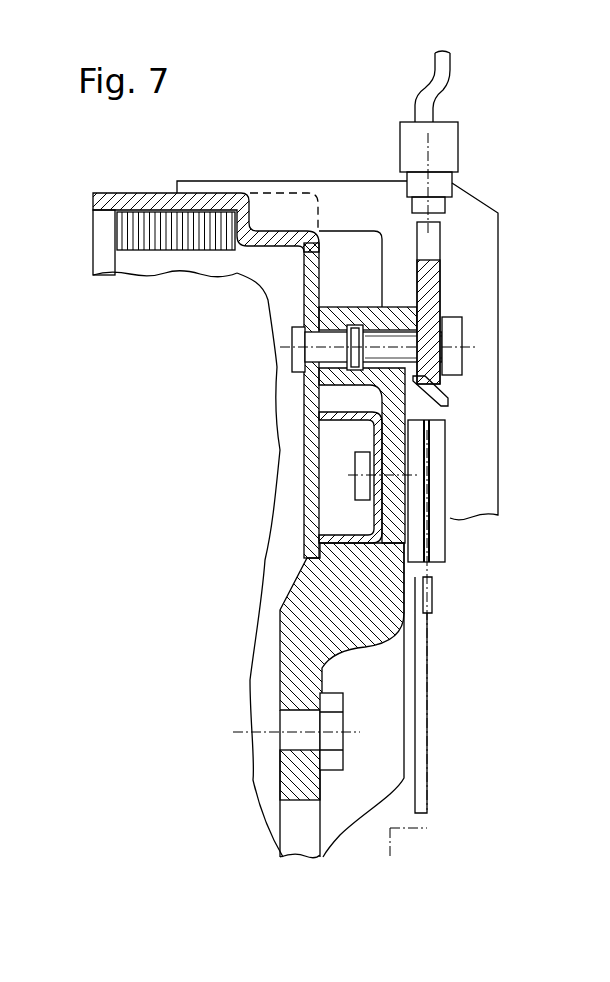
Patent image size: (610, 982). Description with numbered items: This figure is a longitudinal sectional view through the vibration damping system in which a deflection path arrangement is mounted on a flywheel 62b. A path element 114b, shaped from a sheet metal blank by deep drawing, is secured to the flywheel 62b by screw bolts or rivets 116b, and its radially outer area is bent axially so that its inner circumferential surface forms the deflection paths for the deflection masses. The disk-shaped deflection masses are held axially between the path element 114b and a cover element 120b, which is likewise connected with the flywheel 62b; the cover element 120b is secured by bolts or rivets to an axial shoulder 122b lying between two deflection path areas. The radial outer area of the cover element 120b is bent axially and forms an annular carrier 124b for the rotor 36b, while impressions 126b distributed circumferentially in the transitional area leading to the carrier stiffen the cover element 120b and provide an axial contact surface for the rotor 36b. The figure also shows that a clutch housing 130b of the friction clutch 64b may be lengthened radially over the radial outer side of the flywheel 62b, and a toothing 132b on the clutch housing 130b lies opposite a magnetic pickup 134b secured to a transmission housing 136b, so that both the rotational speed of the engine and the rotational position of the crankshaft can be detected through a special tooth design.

The rotor 36b is at (110, 240).
The annular carrier 124b is at (197, 193).
The impressions 126b is at (285, 222).
The axial shoulder 122b is at (402, 306).
The magnetic pickup 134b is at (459, 148).
The toothing 132b is at (442, 238).
The transmission housing 136b is at (498, 315).
The clutch housing 130b is at (450, 392).
The cover element 120b is at (304, 427).
The screw bolts or rivets 116b is at (321, 493).
The path element 114b is at (420, 537).
The flywheel 62b is at (293, 630).
The friction clutch 64b is at (484, 595).